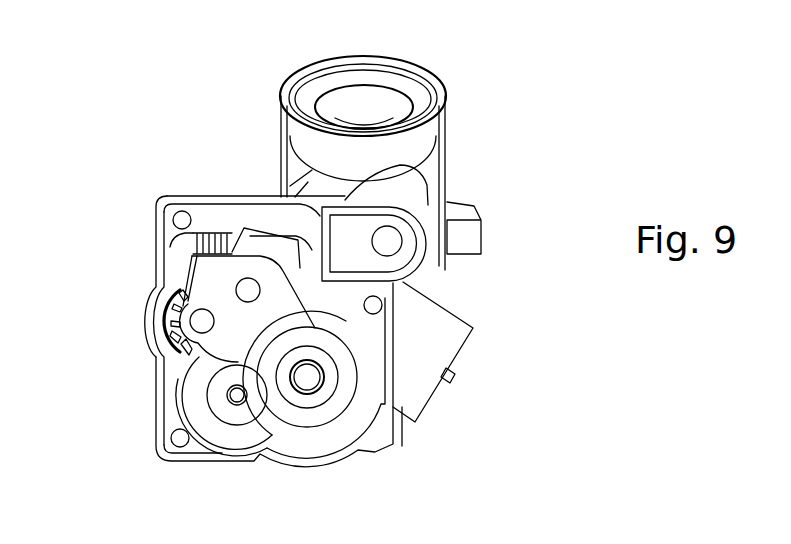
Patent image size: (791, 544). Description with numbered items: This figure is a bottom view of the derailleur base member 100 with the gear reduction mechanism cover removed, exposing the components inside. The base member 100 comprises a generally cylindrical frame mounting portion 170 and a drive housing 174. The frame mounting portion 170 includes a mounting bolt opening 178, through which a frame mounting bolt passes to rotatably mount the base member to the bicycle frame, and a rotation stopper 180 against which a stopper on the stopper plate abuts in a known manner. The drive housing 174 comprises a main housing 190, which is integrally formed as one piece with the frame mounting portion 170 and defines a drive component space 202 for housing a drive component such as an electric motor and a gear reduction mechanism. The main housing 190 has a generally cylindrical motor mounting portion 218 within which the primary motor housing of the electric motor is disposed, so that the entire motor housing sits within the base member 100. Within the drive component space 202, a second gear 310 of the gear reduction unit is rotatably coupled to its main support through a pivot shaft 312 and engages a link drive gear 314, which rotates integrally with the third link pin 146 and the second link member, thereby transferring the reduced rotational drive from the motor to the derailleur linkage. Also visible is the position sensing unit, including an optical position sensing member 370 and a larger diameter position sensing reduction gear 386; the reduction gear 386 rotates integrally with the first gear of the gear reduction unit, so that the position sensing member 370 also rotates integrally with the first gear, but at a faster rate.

The base member 100 is at (147, 135).
The frame mounting portion 170 is at (285, 82).
The mounting bolt opening 178 is at (382, 95).
The rotation stopper 180 is at (465, 203).
The drive housing 174 is at (96, 288).
The main housing 190 is at (163, 392).
The drive component space 202 is at (173, 272).
The optical position sensing member 370 is at (140, 313).
The position sensing reduction gear 386 is at (243, 240).
The motor mounting portion 218 is at (447, 322).
The link drive gear 314 is at (357, 375).
The third link pin 146 is at (312, 381).
The second gear 310 is at (241, 415).
The pivot shaft 312 is at (232, 400).